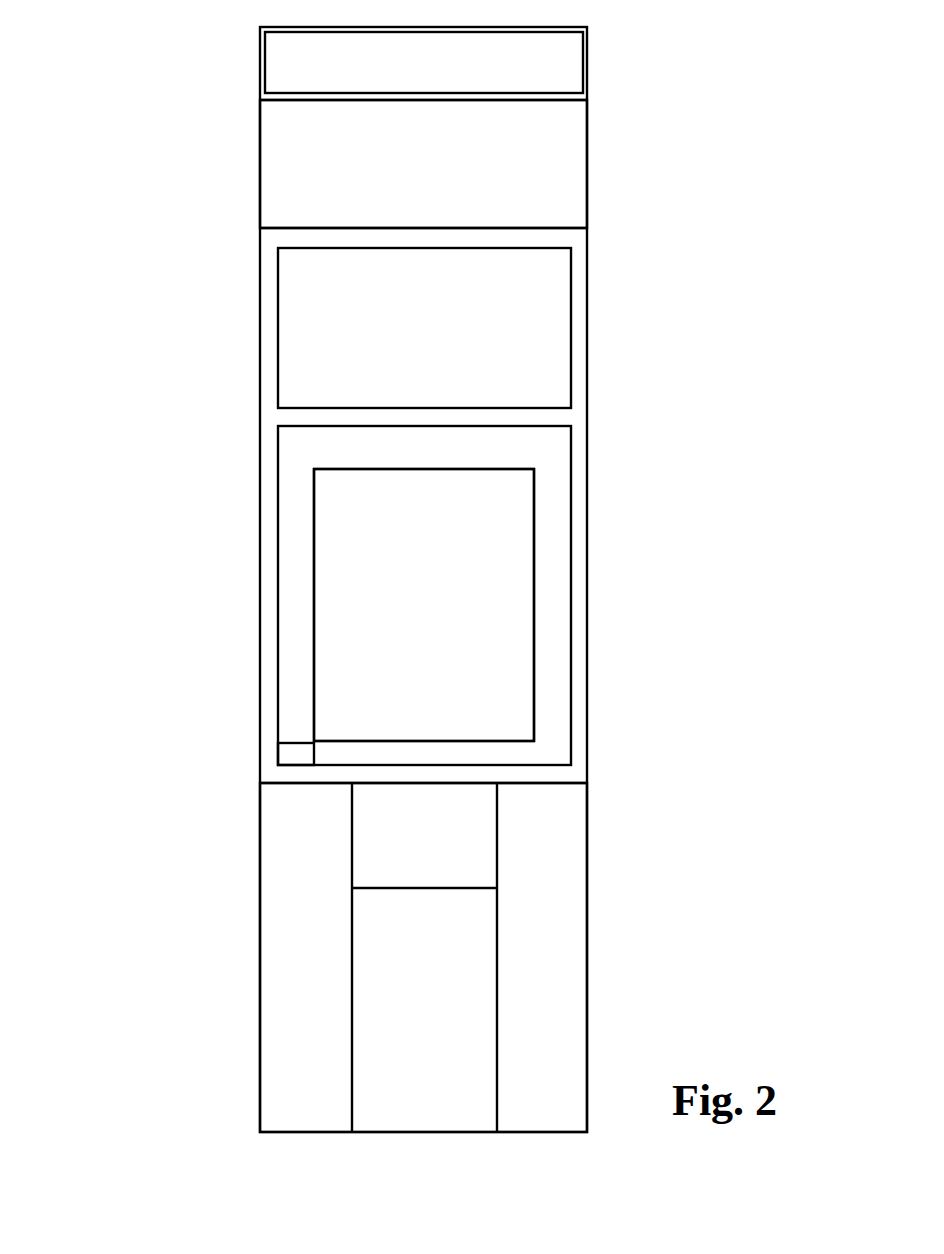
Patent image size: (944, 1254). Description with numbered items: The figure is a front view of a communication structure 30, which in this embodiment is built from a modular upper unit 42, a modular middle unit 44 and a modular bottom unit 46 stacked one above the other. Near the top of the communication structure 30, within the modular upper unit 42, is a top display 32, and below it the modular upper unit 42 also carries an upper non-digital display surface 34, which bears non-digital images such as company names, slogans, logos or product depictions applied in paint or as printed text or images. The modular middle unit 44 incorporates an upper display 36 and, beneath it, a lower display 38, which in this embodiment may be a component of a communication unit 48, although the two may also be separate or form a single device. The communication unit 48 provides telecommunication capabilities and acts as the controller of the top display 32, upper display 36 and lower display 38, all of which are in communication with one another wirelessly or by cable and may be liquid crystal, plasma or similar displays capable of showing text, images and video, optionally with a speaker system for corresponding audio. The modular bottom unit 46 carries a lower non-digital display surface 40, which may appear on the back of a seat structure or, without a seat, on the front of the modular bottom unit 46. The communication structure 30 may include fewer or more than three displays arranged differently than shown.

The communication structure 30 is at (685, 92).
The top display 32 is at (352, 62).
The upper non-digital display surface 34 is at (352, 163).
The upper display 36 is at (352, 318).
The lower display 38 is at (352, 558).
The lower non-digital display surface 40 is at (415, 996).
The modular upper unit 42 is at (588, 194).
The modular middle unit 44 is at (588, 550).
The modular bottom unit 46 is at (590, 930).
The communication unit 48 is at (532, 675).